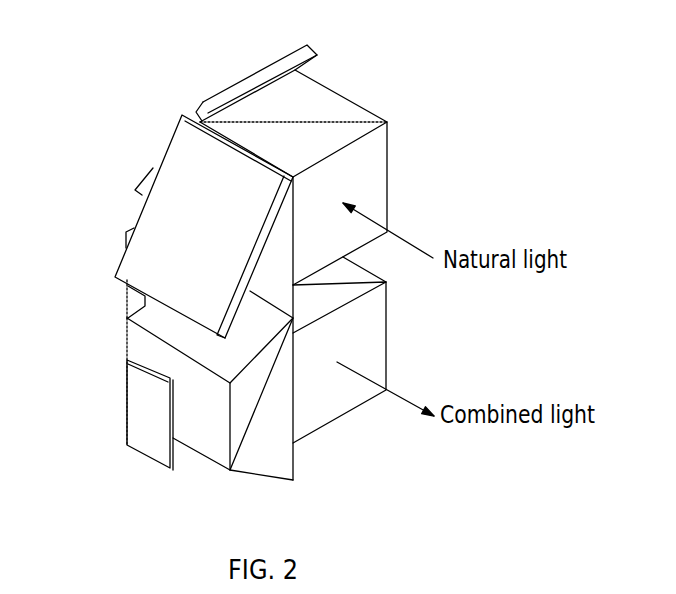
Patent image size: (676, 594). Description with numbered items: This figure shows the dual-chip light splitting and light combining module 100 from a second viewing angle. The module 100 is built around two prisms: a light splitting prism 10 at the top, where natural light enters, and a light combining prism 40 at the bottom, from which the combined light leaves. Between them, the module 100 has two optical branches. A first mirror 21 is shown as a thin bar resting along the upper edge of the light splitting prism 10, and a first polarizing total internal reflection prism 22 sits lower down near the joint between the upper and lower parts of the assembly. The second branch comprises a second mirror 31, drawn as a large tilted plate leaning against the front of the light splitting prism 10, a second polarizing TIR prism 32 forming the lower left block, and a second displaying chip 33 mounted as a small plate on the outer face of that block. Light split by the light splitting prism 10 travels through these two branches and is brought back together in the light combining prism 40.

The dual-chip light splitting and light combining module 100 is at (245, 245).
The light splitting prism 10 is at (320, 110).
The first mirror 21 is at (231, 92).
The first polarizing total internal reflection (TIR) prism 22 is at (145, 297).
The second mirror 31 is at (183, 172).
The second polarizing TIR prism 32 is at (140, 346).
The second displaying chip 33 is at (140, 404).
The light combining prism 40 is at (362, 348).